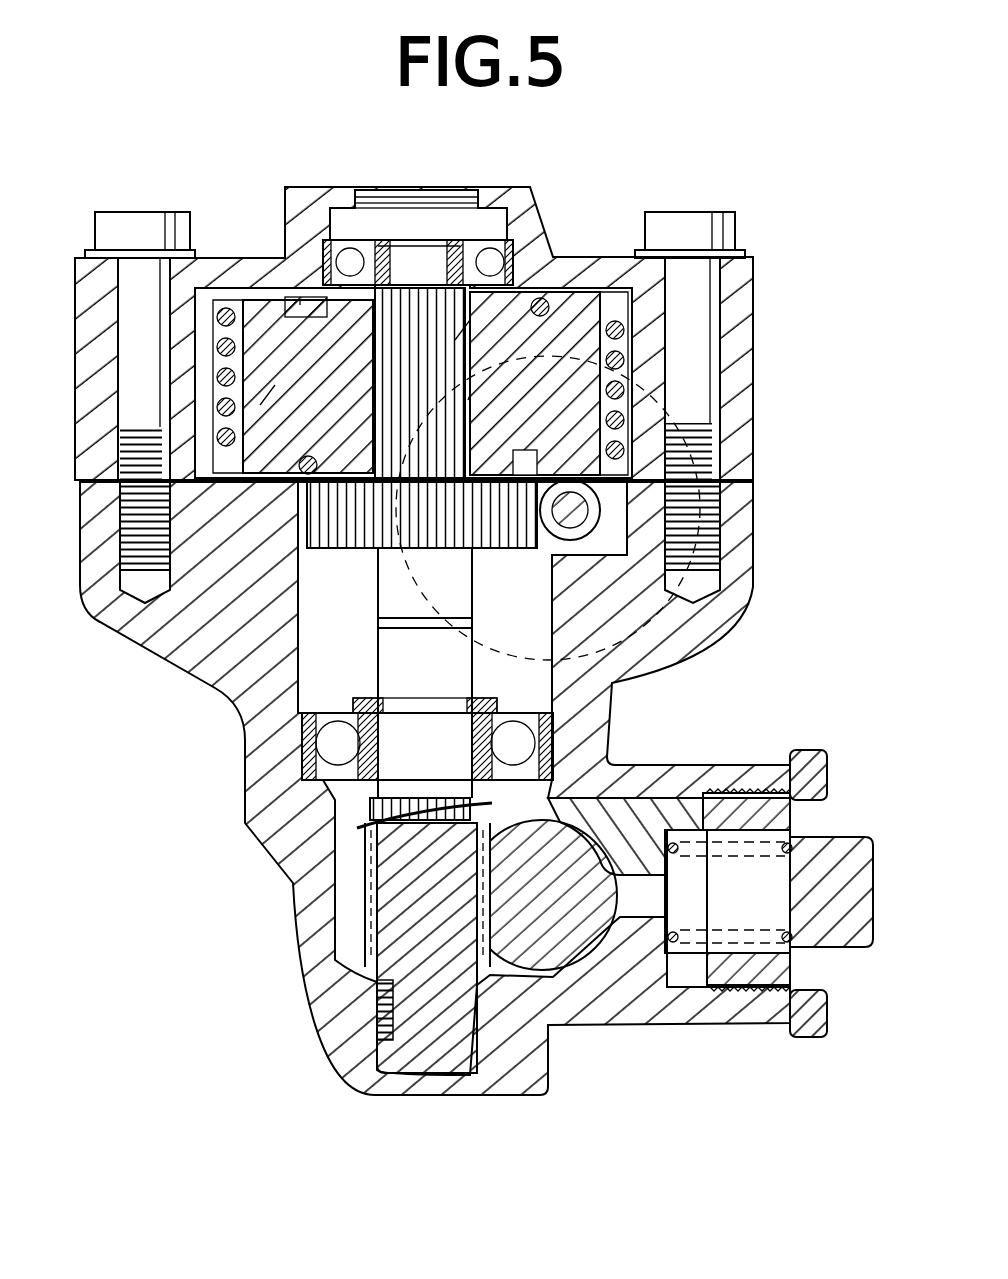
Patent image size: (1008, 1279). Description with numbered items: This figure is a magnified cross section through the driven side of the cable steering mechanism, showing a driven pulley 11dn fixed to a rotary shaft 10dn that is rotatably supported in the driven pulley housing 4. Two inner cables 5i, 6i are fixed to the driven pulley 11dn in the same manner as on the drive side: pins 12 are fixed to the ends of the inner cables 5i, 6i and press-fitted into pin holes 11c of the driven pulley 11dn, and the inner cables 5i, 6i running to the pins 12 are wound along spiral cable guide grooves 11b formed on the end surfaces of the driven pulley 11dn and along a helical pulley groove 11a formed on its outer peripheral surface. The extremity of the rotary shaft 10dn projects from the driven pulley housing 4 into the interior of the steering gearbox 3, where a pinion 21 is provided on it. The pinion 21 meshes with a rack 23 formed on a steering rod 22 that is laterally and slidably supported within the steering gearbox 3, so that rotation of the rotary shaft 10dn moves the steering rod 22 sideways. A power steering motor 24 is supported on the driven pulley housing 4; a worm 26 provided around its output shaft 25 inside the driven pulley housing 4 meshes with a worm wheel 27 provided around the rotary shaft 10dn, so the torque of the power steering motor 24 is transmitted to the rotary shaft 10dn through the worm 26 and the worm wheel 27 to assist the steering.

The steering gearbox 3 is at (235, 770).
The driven pulley housing 4 is at (757, 403).
The inner cable 5i is at (623, 332).
The inner cable 6i is at (640, 423).
The rotary shaft 10dn is at (373, 595).
The driven pulley 11dn is at (578, 287).
The helical pulley groove 11a is at (236, 370).
The spiral cable guide groove 11b is at (268, 405).
The pin hole 11c is at (300, 305).
The pin 12 is at (358, 330).
The pinion 21 is at (363, 897).
The steering rod 22 is at (583, 935).
The rack 23 is at (493, 983).
The power steering motor 24 is at (675, 628).
The output shaft 25 is at (583, 525).
The worm 26 is at (548, 552).
The worm wheel 27 is at (350, 552).